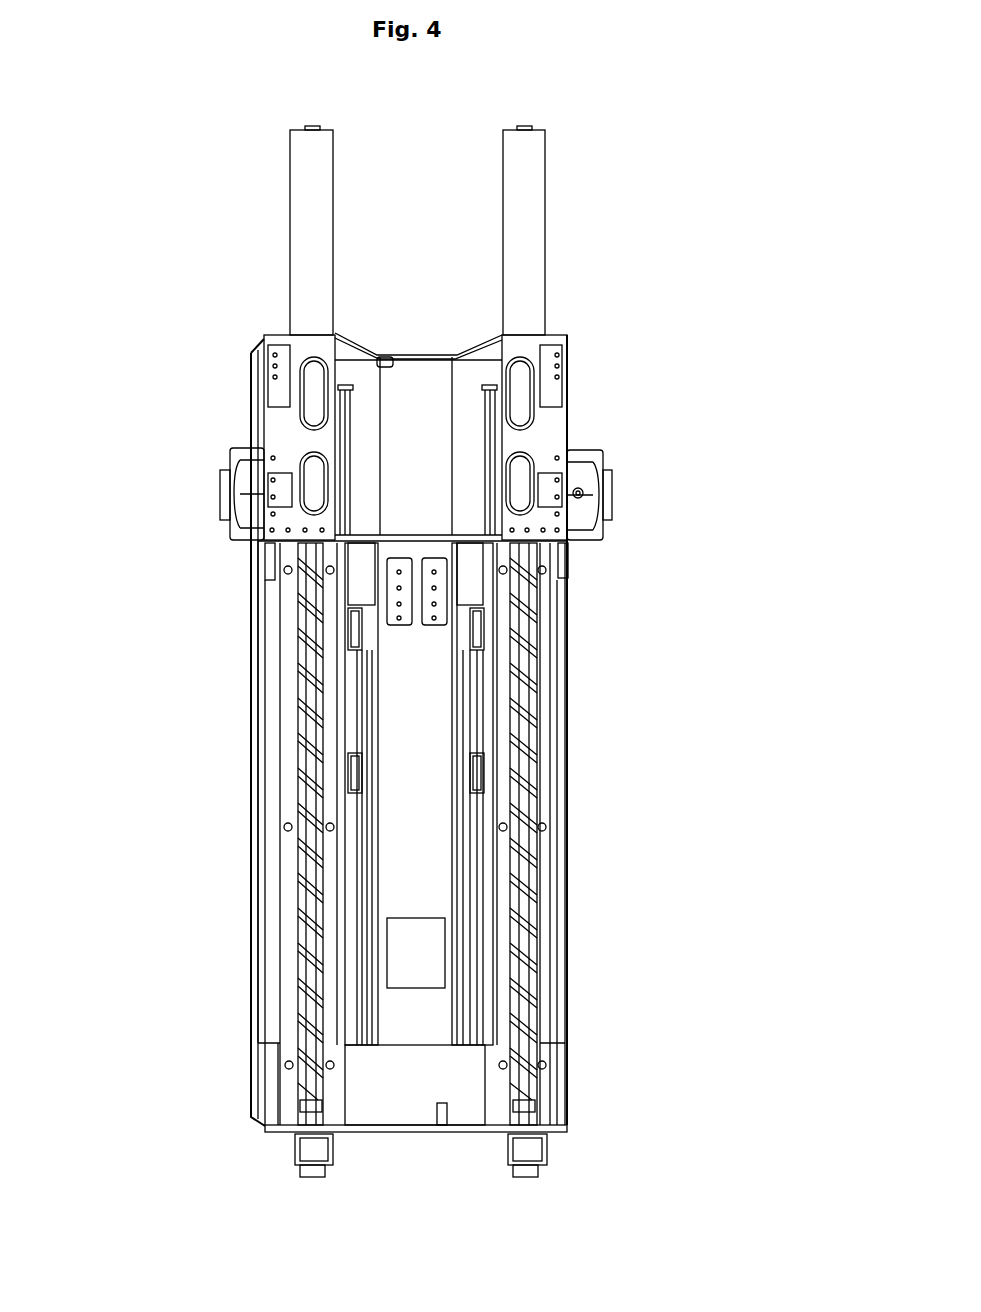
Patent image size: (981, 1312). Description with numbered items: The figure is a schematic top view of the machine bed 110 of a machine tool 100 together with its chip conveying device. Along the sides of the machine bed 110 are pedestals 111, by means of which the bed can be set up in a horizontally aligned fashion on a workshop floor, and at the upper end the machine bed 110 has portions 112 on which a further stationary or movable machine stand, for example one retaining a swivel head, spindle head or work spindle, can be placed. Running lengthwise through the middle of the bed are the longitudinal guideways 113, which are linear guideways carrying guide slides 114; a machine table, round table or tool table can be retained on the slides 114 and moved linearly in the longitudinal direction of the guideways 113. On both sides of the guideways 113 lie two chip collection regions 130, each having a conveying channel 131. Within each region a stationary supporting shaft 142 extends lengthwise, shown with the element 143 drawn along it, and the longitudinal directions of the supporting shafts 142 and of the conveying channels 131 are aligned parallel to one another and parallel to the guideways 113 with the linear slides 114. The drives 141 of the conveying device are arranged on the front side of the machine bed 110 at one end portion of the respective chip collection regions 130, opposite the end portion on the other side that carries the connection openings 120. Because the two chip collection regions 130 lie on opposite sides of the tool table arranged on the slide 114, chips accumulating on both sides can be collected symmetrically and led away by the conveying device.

The machine tool 100 is at (642, 380).
The machine bed 110 is at (567, 620).
The pedestals 111 is at (222, 487).
The portions 112 is at (278, 425).
The longitudinal guideways 113 is at (470, 816).
The guide slides 114 is at (477, 768).
The connection openings 120 is at (330, 245).
The chip collection regions 130 is at (290, 748).
The conveying channel 131 is at (292, 680).
The drives 141 is at (513, 1150).
The stationary supporting shafts 142 is at (315, 126).
The thread 143 is at (305, 870).